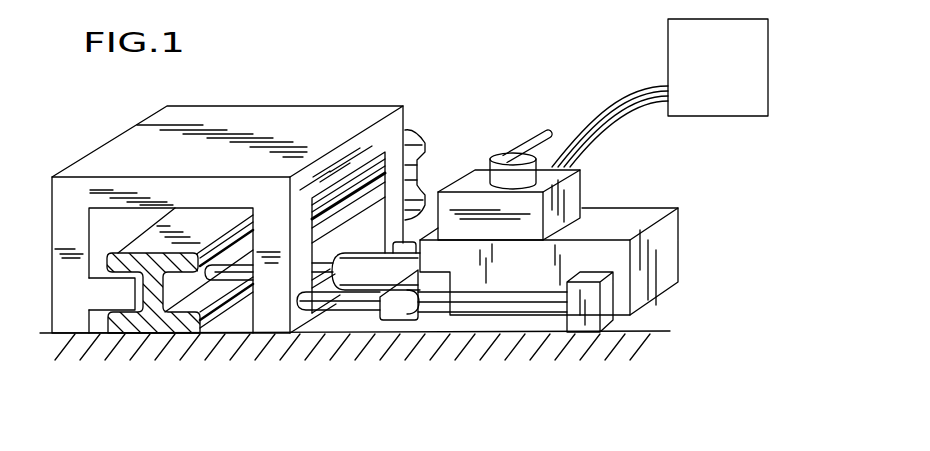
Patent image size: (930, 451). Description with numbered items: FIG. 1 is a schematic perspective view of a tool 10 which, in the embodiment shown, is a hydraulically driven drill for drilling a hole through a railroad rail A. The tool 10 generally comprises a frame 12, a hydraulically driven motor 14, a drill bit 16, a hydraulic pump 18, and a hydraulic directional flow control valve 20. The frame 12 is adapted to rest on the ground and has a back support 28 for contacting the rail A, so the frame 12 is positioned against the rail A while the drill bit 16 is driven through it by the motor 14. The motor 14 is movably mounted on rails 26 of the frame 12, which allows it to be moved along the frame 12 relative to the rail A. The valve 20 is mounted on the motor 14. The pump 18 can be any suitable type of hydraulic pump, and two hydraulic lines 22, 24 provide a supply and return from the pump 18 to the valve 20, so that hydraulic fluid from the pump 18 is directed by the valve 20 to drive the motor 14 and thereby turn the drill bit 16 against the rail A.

The tool 10 is at (493, 86).
The frame 12 is at (286, 106).
The hydraulically driven motor 14 is at (517, 275).
The drill bit 16 is at (220, 275).
The hydraulic pump 18 is at (697, 19).
The hydraulic directional flow control valve 20 is at (578, 192).
The hydraulic line 22 is at (598, 131).
The hydraulic line 24 is at (608, 111).
The rails 26 is at (353, 308).
The back support 28 is at (110, 297).
The railroad rail A is at (156, 334).